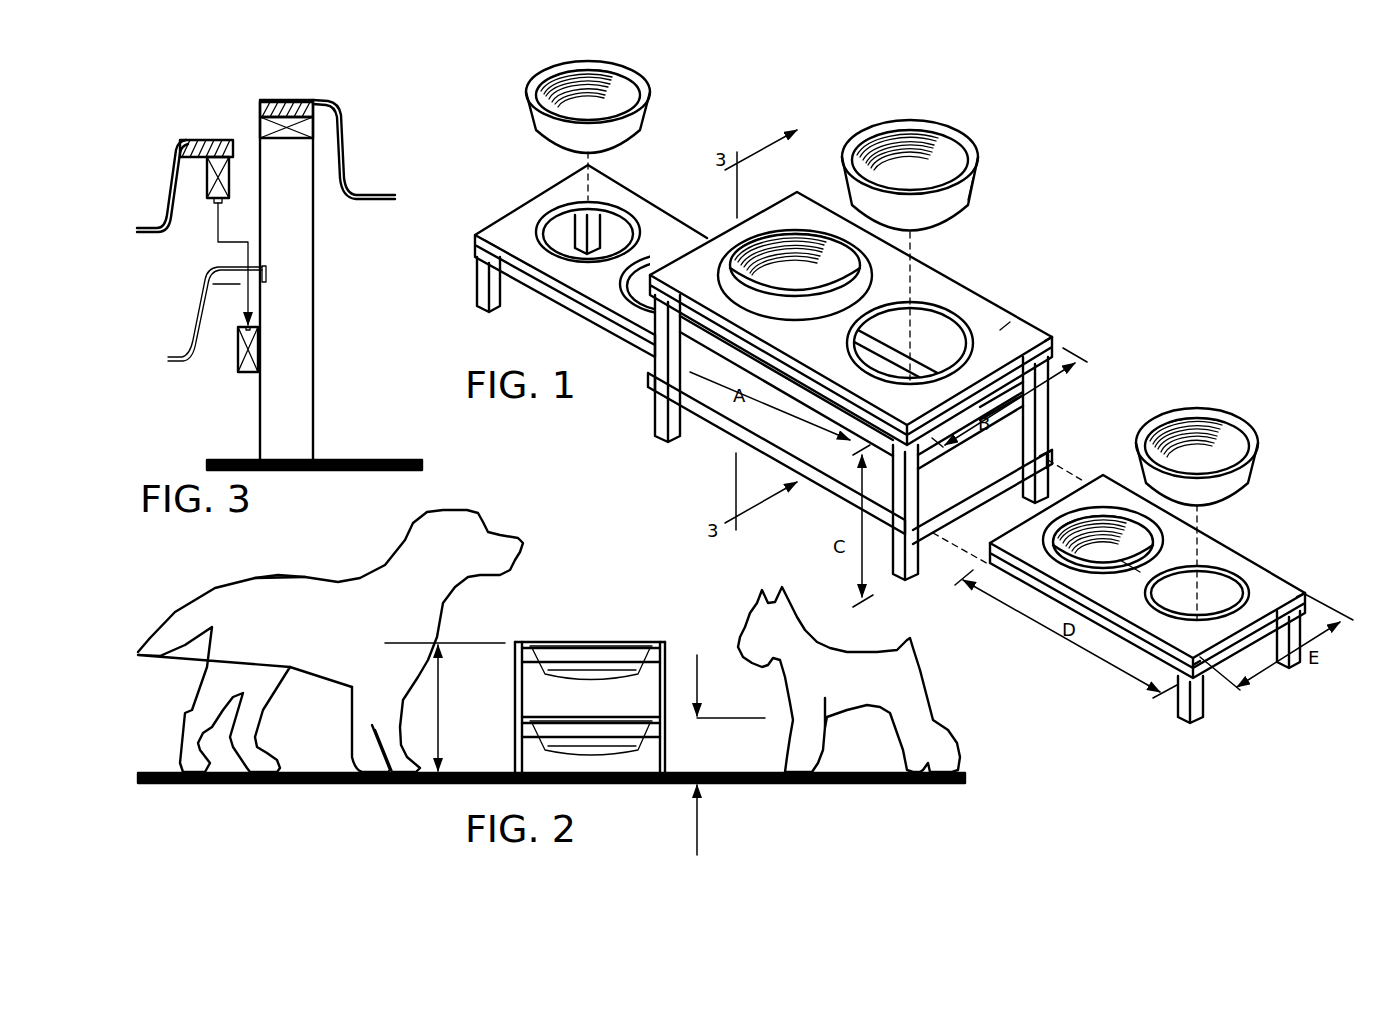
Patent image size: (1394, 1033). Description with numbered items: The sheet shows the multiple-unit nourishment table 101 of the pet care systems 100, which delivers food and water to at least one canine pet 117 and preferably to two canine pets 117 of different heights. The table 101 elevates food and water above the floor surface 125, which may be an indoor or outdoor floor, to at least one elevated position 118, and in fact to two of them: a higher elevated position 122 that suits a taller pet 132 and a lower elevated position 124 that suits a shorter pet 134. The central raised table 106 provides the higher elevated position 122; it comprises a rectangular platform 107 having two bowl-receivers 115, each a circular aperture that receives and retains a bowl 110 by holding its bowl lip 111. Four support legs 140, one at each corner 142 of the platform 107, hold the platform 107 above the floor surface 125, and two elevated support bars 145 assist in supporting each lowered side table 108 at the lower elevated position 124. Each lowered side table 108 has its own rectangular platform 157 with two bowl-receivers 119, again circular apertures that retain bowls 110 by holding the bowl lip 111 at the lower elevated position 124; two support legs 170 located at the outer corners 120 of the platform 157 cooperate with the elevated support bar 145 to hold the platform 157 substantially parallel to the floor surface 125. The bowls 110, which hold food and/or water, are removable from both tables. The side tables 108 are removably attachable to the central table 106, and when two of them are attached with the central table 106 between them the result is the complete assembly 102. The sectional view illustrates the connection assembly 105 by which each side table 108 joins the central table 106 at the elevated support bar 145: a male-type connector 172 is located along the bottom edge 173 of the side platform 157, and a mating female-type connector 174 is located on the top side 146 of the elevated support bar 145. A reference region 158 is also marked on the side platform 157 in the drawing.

In FIG. 3, the pet care systems 100 is at (350, 120).
In FIG. 1, the pet care systems 100 is at (1155, 148).
In FIG. 3, the multiple-unit nourishment table 101 is at (348, 145).
In FIG. 1, the multiple-unit nourishment table 101 is at (1155, 175).
In FIG. 2, the multiple-unit nourishment table 101 is at (550, 540).
In FIG. 1, the complete assembly 102 is at (1155, 203).
In FIG. 3, the connection assembly 105 is at (345, 170).
In FIG. 1, the connection assembly 105 is at (1080, 465).
In FIG. 3, the central raised table 106 is at (260, 100).
In FIG. 1, the central raised table 106 is at (975, 258).
In FIG. 2, the central raised table 106 is at (663, 642).
In FIG. 1, the platform 107 is at (1003, 330).
In FIG. 3, the lowered side table 108 is at (192, 140).
In FIG. 1, the lowered side table 108 is at (628, 202).
In FIG. 2, the lowered side table 108 is at (518, 733).
In FIG. 3, the bowl 110 is at (172, 175).
In FIG. 1, the bowl 110 is at (650, 100).
In FIG. 1, the bowl lip 111 is at (978, 180).
In FIG. 1, the bowl-receiver 115 is at (940, 340).
In FIG. 2, the canine pet 117 is at (300, 577).
In FIG. 2, the elevated position 118 is at (500, 643).
In FIG. 1, the bowl-receiver 119 is at (1230, 600).
In FIG. 1, the outer corners 120 is at (1308, 590).
In FIG. 2, the higher elevated position 122 is at (452, 643).
In FIG. 2, the lower elevated position 124 is at (728, 718).
In FIG. 2, the floor surface 125 is at (840, 783).
In FIG. 2, the taller pet 132 is at (275, 577).
In FIG. 2, the shorter pet 134 is at (828, 723).
In FIG. 1, the support leg 140 is at (1043, 397).
In FIG. 1, the corner 142 is at (1053, 348).
In FIG. 3, the elevated support bar 145 is at (238, 362).
In FIG. 1, the elevated support bar 145 is at (720, 432).
In FIG. 3, the top side 146 is at (240, 327).
In FIG. 1, the top side 146 is at (1008, 476).
In FIG. 3, the platform 157 is at (236, 157).
In FIG. 1, the platform 157 is at (490, 238).
In FIG. 1, the tray region 158 is at (1122, 582).
In FIG. 1, the support leg 170 is at (478, 282).
In FIG. 3, the male-type connector 172 is at (215, 205).
In FIG. 3, the bottom edge 173 is at (222, 205).
In FIG. 3, the female-type connector 174 is at (250, 328).
In FIG. 1, the female-type connector 174 is at (1030, 430).